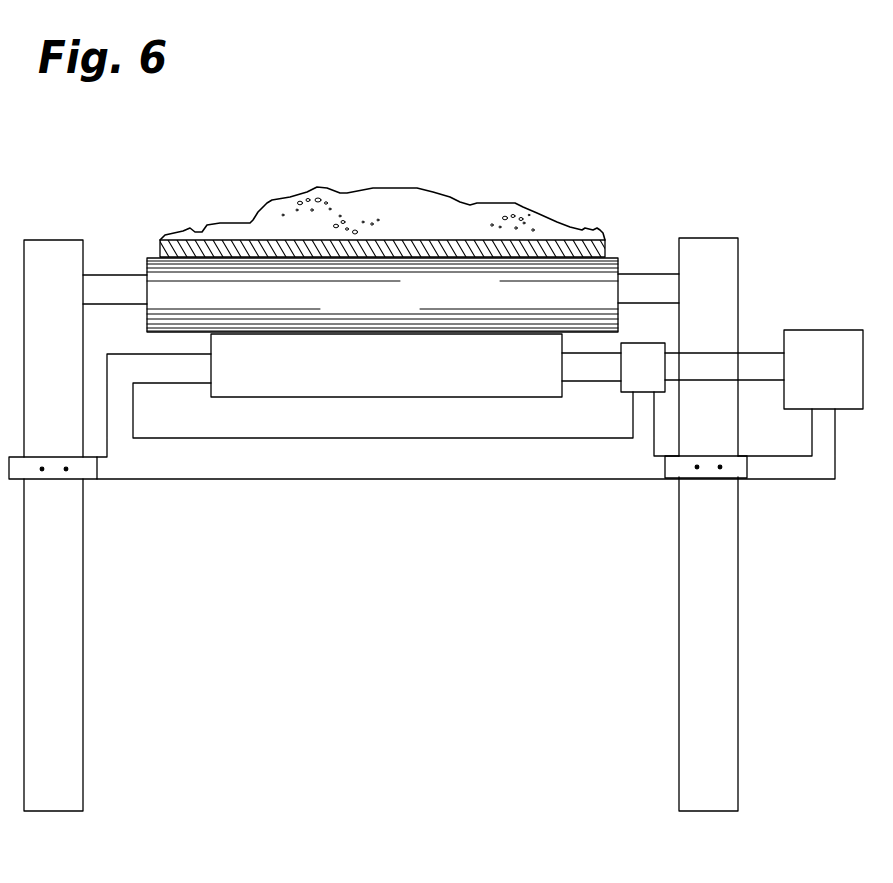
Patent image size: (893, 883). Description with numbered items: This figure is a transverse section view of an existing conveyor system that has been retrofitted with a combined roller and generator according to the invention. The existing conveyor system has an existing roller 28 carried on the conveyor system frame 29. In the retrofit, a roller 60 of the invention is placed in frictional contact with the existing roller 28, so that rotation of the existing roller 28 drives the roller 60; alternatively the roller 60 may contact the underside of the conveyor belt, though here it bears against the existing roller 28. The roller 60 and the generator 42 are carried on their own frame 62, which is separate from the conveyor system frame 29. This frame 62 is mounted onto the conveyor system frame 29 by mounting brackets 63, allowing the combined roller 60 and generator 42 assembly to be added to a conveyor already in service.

The existing roller 28 is at (612, 257).
The conveyor system frame 29 is at (718, 238).
The generator 42 is at (839, 368).
The roller 60 is at (380, 385).
The frame 62 is at (642, 465).
The mounting brackets 63 is at (85, 472).